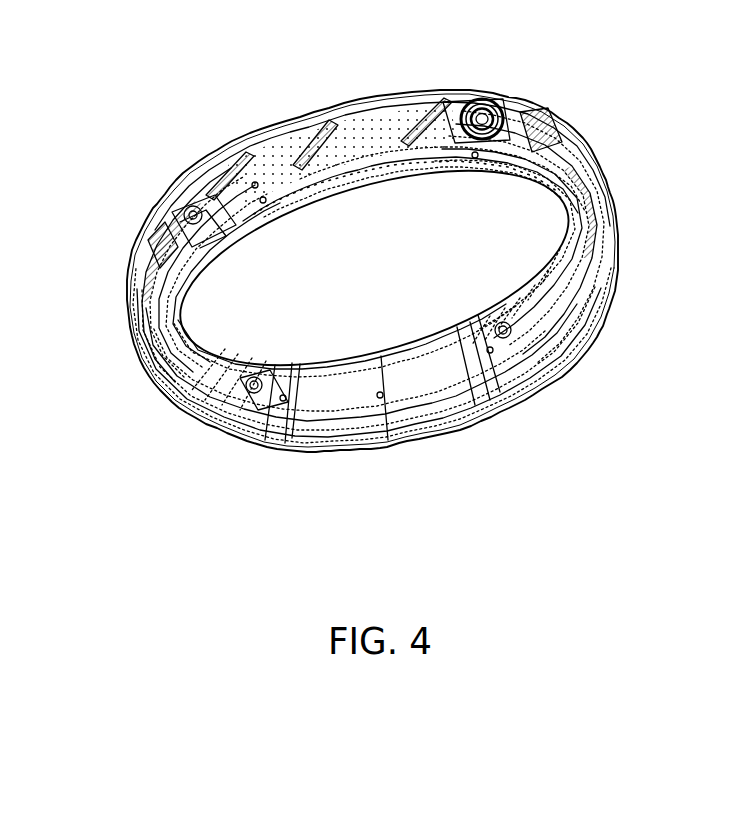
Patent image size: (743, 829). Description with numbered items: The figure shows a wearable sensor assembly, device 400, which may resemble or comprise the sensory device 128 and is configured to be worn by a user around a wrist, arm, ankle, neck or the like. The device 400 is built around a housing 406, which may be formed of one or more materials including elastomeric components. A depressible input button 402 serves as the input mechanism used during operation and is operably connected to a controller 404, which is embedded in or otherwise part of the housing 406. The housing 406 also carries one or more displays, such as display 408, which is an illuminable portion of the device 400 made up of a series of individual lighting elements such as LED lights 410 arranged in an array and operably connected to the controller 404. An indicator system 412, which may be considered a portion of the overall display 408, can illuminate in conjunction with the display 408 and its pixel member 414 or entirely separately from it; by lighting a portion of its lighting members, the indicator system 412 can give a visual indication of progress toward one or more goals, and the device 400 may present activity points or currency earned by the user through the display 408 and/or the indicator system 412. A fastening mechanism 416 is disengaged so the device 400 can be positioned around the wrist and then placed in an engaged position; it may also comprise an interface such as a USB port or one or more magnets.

The sensory device 128 is at (600, 104).
The device 400 is at (403, 266).
The depressible input button 402 is at (488, 86).
The controller 404 is at (132, 252).
The housing 406 is at (615, 173).
The display 408 is at (303, 138).
The LED lights 410 is at (355, 115).
The indicator system 412 is at (398, 162).
The pixel member 414 is at (372, 178).
The fastening mechanism 416 is at (407, 447).